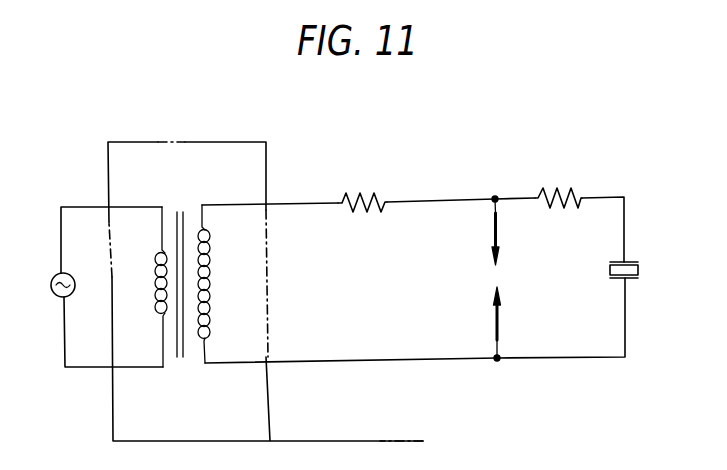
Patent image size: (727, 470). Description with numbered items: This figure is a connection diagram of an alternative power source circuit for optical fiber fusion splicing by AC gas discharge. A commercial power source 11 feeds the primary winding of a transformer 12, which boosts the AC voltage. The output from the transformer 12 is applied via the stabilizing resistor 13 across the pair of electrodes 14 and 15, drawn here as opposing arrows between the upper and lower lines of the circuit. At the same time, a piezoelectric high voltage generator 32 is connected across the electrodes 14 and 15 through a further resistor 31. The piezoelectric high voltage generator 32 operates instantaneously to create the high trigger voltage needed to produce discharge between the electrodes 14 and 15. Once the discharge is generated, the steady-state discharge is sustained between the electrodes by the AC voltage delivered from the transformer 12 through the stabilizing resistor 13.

The commercial power source 11 is at (53, 277).
The transformer 12 is at (187, 138).
The stabilizing resistor 13 is at (348, 197).
The electrode 14 is at (490, 262).
The electrode 15 is at (493, 297).
The resistor 31 is at (547, 190).
The piezoelectric high voltage generator 32 is at (632, 260).